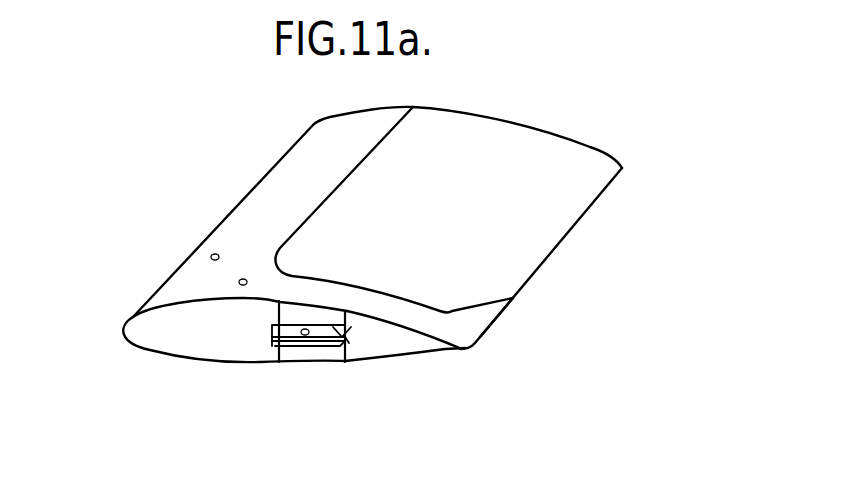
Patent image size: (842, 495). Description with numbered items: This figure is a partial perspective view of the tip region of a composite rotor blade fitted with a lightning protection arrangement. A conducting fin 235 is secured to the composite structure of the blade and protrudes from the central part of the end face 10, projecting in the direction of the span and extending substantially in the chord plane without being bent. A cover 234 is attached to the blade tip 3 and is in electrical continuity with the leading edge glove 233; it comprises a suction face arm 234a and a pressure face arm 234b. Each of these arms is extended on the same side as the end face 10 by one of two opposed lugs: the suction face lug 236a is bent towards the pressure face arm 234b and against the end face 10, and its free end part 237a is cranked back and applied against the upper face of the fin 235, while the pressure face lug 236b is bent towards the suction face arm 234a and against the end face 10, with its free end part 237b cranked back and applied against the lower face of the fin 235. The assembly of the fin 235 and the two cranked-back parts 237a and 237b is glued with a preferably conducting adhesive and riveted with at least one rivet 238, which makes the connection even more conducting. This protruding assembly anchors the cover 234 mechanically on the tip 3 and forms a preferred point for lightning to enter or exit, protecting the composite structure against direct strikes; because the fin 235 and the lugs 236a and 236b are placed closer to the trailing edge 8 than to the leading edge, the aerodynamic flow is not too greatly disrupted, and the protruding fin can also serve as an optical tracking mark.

The leading edge glove 233 is at (263, 178).
The trailing edge 8 is at (583, 215).
The tip 3 is at (514, 298).
The cover 234 is at (365, 285).
The suction face arm 234a is at (437, 319).
The pressure face arm 234b is at (440, 353).
The end face 10 is at (153, 333).
The suction face lug 236a is at (283, 314).
The conducting fin 235 is at (277, 348).
The free end part of suction face lug 237a is at (347, 349).
The free end part of pressure face lug 237b is at (292, 347).
The pressure face lug 236b is at (325, 352).
The rivet 238 is at (308, 346).